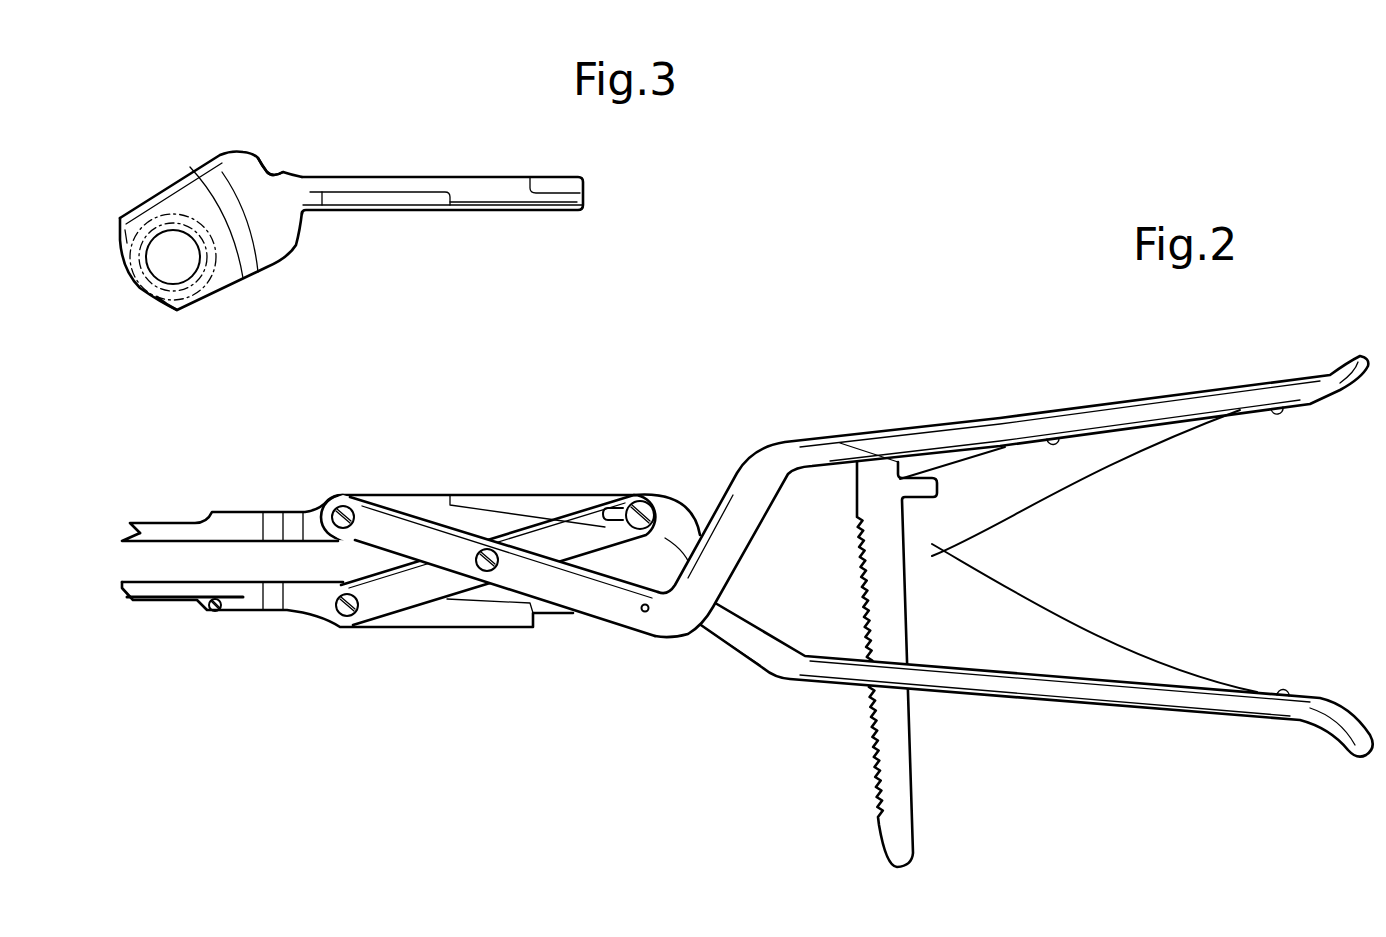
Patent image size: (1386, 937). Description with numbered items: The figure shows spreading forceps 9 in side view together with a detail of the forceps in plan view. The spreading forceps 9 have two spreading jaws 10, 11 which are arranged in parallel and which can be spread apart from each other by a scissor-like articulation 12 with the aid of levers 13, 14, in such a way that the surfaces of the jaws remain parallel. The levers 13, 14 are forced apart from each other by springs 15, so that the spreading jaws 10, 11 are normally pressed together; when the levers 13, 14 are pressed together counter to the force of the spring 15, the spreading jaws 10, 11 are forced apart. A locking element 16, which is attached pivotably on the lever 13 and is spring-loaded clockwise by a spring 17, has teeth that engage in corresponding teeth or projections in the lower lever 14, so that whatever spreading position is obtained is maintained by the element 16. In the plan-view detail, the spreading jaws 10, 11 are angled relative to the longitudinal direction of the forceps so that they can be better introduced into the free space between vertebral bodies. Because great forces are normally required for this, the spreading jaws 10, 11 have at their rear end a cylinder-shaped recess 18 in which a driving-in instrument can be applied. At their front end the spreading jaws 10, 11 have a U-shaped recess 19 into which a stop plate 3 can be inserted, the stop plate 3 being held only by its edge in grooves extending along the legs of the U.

In FIG. 3, the stop plate 3 is at (160, 256).
In FIG. 2, the spreading forceps 9 is at (866, 370).
In FIG. 2, the spreading jaw 10 is at (228, 523).
In FIG. 3, the spreading jaw 11 is at (263, 247).
In FIG. 2, the spreading jaw 11 is at (250, 600).
In FIG. 3, the scissor-like articulation 12 is at (490, 197).
In FIG. 2, the scissor-like articulation 12 is at (545, 582).
In FIG. 2, the lever 13 is at (1118, 418).
In FIG. 2, the lower lever 14 is at (1095, 690).
In FIG. 2, the spring 15 is at (1077, 482).
In FIG. 2, the locking element 16 is at (890, 751).
In FIG. 2, the spring 17 is at (972, 455).
In FIG. 3, the cylinder-shaped recess 18 is at (270, 168).
In FIG. 3, the U-shaped recess 19 is at (165, 312).